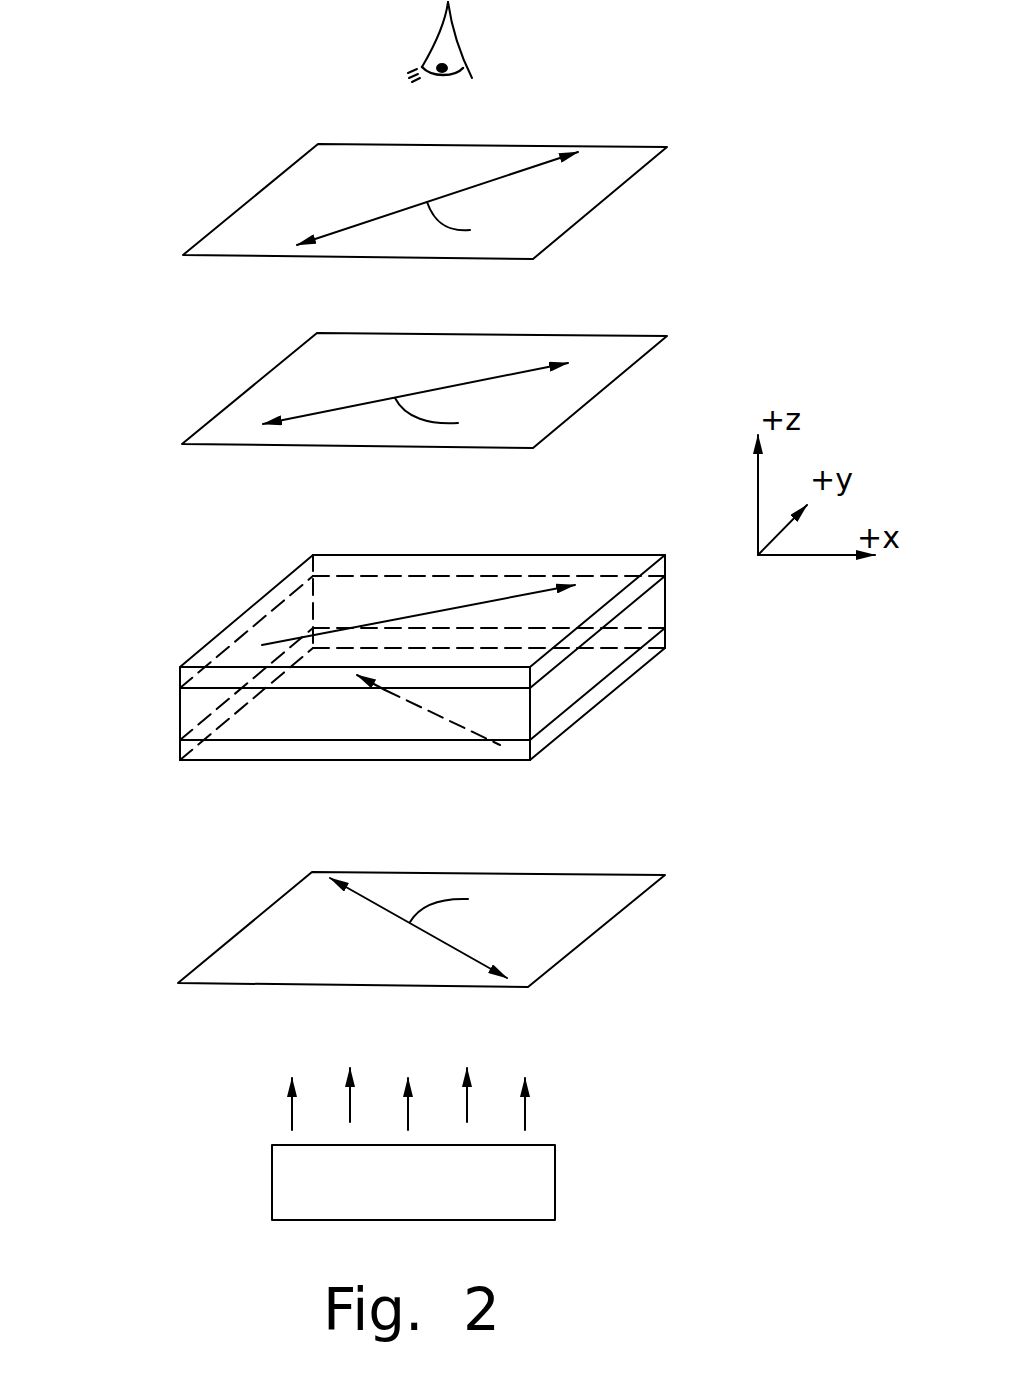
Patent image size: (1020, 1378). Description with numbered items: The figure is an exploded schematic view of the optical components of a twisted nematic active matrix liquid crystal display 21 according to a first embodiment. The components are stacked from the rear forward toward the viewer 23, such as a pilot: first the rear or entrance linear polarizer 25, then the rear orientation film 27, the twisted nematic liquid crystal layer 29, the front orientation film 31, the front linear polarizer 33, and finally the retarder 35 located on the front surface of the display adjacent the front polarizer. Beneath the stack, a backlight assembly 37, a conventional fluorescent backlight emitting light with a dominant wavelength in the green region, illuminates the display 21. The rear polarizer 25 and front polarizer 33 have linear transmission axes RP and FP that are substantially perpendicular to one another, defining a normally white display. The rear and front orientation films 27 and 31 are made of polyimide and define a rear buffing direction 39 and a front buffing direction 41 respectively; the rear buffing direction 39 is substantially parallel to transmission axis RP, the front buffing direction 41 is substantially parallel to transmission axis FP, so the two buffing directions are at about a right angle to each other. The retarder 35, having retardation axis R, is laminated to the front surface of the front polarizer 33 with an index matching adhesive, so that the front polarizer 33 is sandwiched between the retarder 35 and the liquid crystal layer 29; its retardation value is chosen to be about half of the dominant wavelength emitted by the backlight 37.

The twisted nematic active matrix liquid crystal display 21 is at (168, 557).
The viewer 23 is at (452, 32).
The rear linear polarizer 25 is at (568, 927).
The rear orientation film 27 is at (620, 680).
The twisted nematic liquid crystal layer 29 is at (508, 713).
The front orientation film 31 is at (432, 668).
The front linear polarizer 33 is at (587, 363).
The retarder 35 is at (573, 197).
The backlight assembly 37 is at (537, 1185).
The rear buffing direction 39 is at (437, 717).
The front buffing direction 41 is at (413, 612).